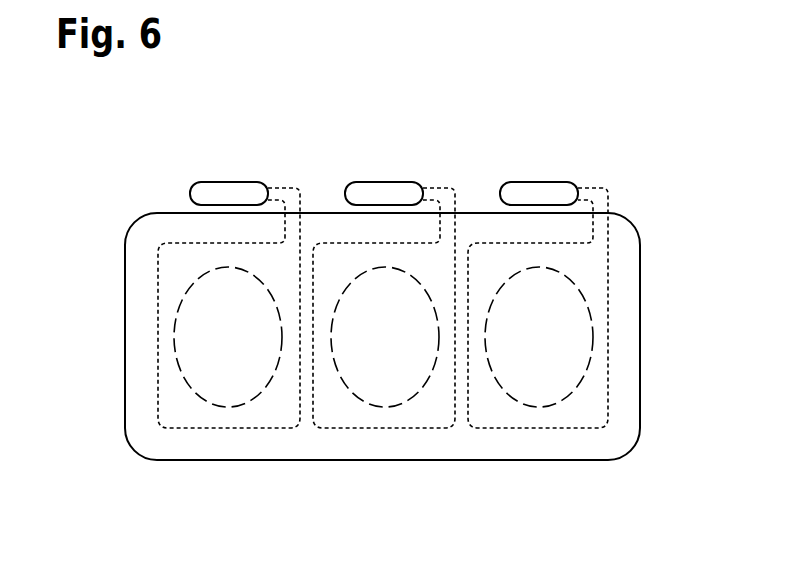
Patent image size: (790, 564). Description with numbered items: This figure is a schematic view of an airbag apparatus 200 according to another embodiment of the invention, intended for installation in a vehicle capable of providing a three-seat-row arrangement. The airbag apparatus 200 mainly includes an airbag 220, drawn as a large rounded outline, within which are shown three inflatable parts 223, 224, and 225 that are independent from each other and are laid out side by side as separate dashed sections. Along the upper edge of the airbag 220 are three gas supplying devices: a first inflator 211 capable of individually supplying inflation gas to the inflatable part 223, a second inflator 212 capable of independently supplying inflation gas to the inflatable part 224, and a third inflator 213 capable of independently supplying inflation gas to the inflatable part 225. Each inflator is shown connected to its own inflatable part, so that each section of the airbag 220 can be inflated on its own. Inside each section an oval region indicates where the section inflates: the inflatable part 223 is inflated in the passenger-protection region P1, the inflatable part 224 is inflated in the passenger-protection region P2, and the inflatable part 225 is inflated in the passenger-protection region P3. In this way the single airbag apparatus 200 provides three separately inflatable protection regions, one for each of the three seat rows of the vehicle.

The airbag apparatus 200 is at (457, 98).
The first inflator 211 is at (225, 193).
The second inflator 212 is at (388, 193).
The third inflator 213 is at (540, 193).
The airbag 220 is at (644, 224).
The inflatable part 223 is at (198, 432).
The inflatable part 224 is at (380, 432).
The inflatable part 225 is at (527, 432).
The passenger-protection region P1 is at (247, 390).
The passenger-protection region P2 is at (400, 392).
The passenger-protection region P3 is at (550, 393).